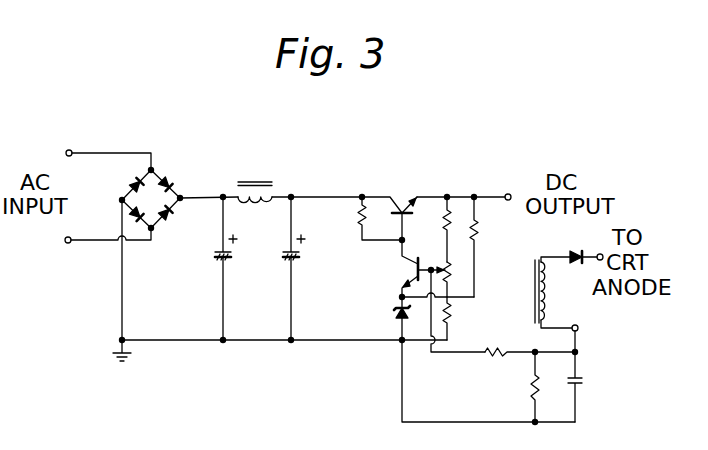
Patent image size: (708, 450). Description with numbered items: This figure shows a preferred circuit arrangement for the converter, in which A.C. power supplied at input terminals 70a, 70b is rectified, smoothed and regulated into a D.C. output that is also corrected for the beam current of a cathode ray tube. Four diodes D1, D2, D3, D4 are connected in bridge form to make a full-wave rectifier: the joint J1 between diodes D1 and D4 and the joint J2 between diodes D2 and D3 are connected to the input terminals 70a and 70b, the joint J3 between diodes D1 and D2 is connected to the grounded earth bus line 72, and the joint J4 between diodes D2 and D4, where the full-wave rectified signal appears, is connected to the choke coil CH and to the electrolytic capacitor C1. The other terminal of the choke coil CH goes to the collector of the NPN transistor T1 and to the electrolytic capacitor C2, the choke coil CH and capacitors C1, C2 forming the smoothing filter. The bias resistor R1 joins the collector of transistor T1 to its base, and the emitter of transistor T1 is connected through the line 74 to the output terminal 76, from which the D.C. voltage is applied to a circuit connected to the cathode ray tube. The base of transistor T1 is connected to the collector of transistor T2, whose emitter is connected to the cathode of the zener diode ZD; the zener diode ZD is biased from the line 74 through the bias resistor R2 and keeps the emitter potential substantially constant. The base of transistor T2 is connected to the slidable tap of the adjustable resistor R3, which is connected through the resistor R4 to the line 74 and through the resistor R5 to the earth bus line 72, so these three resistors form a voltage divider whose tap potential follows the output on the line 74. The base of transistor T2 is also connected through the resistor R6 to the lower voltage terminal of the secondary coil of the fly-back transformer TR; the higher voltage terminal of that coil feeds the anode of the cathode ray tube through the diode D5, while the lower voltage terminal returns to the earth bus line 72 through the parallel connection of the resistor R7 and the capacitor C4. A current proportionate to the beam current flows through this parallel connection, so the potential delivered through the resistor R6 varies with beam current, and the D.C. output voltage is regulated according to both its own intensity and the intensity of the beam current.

The input terminal 70a is at (70, 150).
The input terminal 70b is at (68, 243).
The earth bus line 72 is at (178, 342).
The line 74 is at (462, 196).
The output terminal 76 is at (508, 194).
The joint J1 is at (153, 167).
The joint J2 is at (152, 232).
The joint J3 is at (120, 200).
The joint J4 is at (181, 196).
The diode D1 is at (131, 180).
The diode D2 is at (127, 215).
The diode D3 is at (167, 222).
The diode D4 is at (173, 190).
The diode D5 is at (580, 248).
The choke coil CH is at (262, 180).
The electrolytic capacitor C1 is at (230, 257).
The electrolytic capacitor C2 is at (298, 258).
The capacitor C4 is at (583, 385).
The bias resistor R1 is at (360, 223).
The bias resistor R2 is at (477, 233).
The adjustable resistor R3 is at (450, 272).
The resistor R4 is at (450, 226).
The resistor R5 is at (452, 322).
The resistor R6 is at (490, 355).
The resistor R7 is at (531, 393).
The transistor T1 is at (400, 196).
The transistor T2 is at (410, 270).
The zener diode ZD is at (397, 313).
The fly-back transformer TR is at (534, 283).